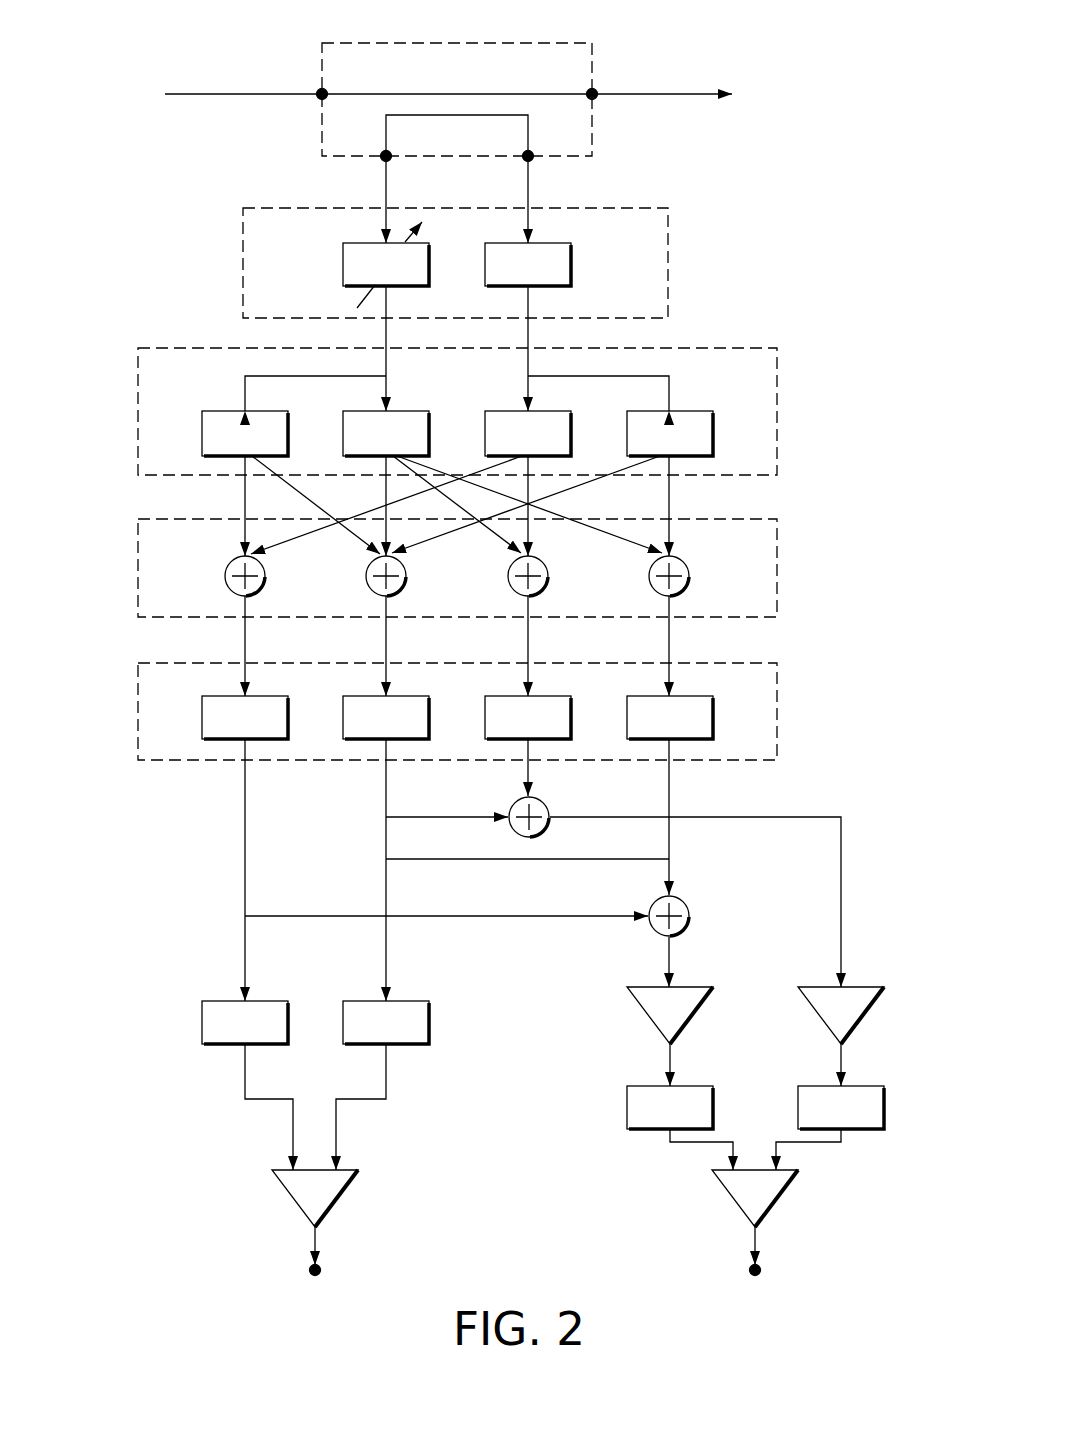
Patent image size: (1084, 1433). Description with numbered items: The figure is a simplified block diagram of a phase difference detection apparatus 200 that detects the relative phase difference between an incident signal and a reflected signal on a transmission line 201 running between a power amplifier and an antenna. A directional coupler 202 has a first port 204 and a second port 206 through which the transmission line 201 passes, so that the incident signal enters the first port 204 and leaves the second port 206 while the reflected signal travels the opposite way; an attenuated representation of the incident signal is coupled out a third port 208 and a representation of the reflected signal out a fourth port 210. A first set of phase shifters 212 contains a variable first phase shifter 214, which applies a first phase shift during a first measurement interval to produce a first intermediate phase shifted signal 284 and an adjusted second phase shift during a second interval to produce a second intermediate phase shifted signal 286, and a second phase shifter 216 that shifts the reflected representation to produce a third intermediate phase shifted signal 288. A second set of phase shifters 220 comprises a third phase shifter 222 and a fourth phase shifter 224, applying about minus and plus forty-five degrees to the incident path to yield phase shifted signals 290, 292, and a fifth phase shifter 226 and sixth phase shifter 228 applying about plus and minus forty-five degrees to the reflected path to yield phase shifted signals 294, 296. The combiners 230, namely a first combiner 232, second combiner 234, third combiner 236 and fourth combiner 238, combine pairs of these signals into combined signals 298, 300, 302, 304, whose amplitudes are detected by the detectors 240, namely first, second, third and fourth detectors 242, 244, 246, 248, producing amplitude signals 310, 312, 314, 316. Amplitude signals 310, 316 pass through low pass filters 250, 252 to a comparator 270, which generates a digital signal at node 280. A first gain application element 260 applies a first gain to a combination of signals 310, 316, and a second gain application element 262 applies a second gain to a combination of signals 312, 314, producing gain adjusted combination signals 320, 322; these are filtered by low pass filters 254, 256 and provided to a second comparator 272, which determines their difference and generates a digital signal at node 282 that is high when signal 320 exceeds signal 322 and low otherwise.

The phase difference detection apparatus 200 is at (152, 145).
The transmission line 201 is at (184, 92).
The directional coupler 202 is at (410, 42).
The first port 204 is at (322, 92).
The second port 206 is at (592, 92).
The third port 208 is at (386, 158).
The fourth port 210 is at (528, 158).
The first set of phase shifters 212 is at (243, 248).
The first phase shifter 214 is at (343, 262).
The second phase shifter 216 is at (572, 262).
The second set of phase shifters 220 is at (138, 398).
The third phase shifter 222 is at (202, 432).
The fourth phase shifter 224 is at (343, 432).
The fifth phase shifter 226 is at (485, 432).
The sixth phase shifter 228 is at (627, 432).
The plurality of combiners 230 is at (138, 568).
The first combiner 232 is at (228, 586).
The second combiner 234 is at (369, 586).
The third combiner 236 is at (511, 586).
The fourth combiner 238 is at (652, 586).
The plurality of detectors 240 is at (138, 712).
The first detector 242 is at (202, 716).
The second detector 244 is at (343, 716).
The third detector 246 is at (485, 716).
The fourth detector 248 is at (627, 716).
The low pass filter 250 is at (202, 1022).
The low pass filter 252 is at (429, 1022).
The low pass filter 254 is at (627, 1107).
The low pass filter 256 is at (884, 1107).
The first gain application element 260 is at (648, 1013).
The second gain application element 262 is at (820, 1013).
The comparator 270 is at (294, 1203).
The second comparator 272 is at (737, 1203).
The node 280 is at (311, 1270).
The node 282 is at (751, 1270).
The first intermediate phase shifted signal 284 is at (388, 298).
The second intermediate phase shifted signal 286 is at (388, 375).
The third intermediate phase shifted signal 288 is at (530, 298).
The first-interval phase shifted signal 290 is at (245, 493).
The first-interval phase shifted signal 292 is at (492, 532).
The phase shifted signal 294 is at (290, 540).
The first-interval phase shifted signal 296 is at (590, 483).
The first combined signal 298 is at (245, 638).
The second combined signal 300 is at (386, 638).
The third combined signal 302 is at (528, 638).
The fourth combined signal 304 is at (669, 638).
The first amplitude signal 310 is at (245, 787).
The second amplitude signal 312 is at (386, 787).
The third amplitude signal 314 is at (528, 768).
The fourth amplitude signal 316 is at (669, 782).
The first gain adjusted combination signal 320 is at (669, 1053).
The second gain adjusted combination signal 322 is at (841, 1053).